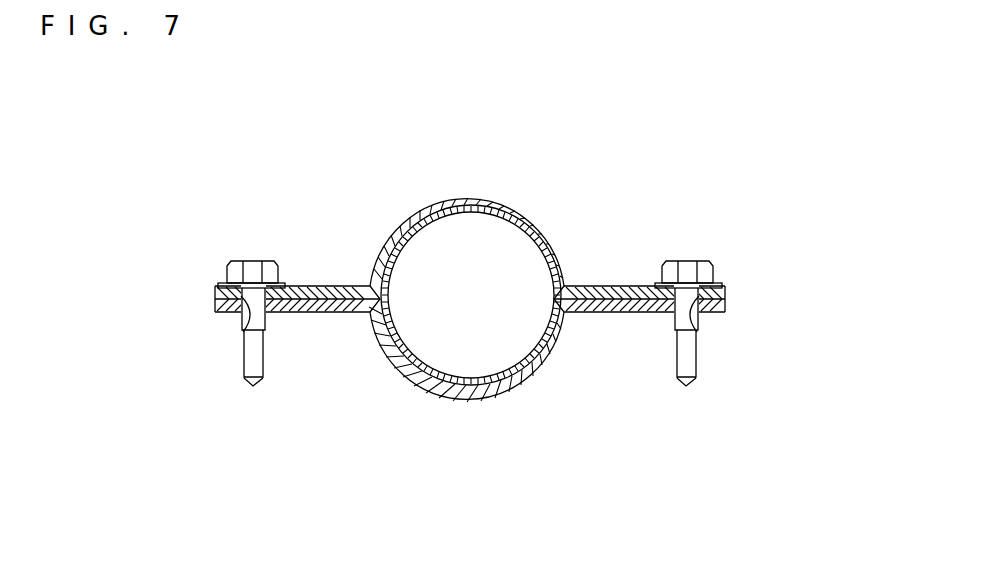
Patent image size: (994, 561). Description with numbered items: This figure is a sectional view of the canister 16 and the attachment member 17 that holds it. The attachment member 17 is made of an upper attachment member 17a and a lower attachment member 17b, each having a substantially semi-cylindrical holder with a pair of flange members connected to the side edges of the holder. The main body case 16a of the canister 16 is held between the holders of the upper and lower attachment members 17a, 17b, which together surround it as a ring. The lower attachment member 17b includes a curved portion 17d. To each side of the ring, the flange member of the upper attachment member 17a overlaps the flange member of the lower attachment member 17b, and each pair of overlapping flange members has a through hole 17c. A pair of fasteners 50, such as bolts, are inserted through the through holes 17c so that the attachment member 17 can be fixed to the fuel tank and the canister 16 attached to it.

The canister 16 is at (465, 248).
The main body case 16a is at (410, 218).
The attachment member 17 is at (471, 305).
The upper attachment member 17a is at (632, 315).
The lower attachment member 17b is at (583, 318).
The through hole 17c is at (244, 331).
The curved portion 17d is at (415, 385).
The fastener 50 is at (253, 270).